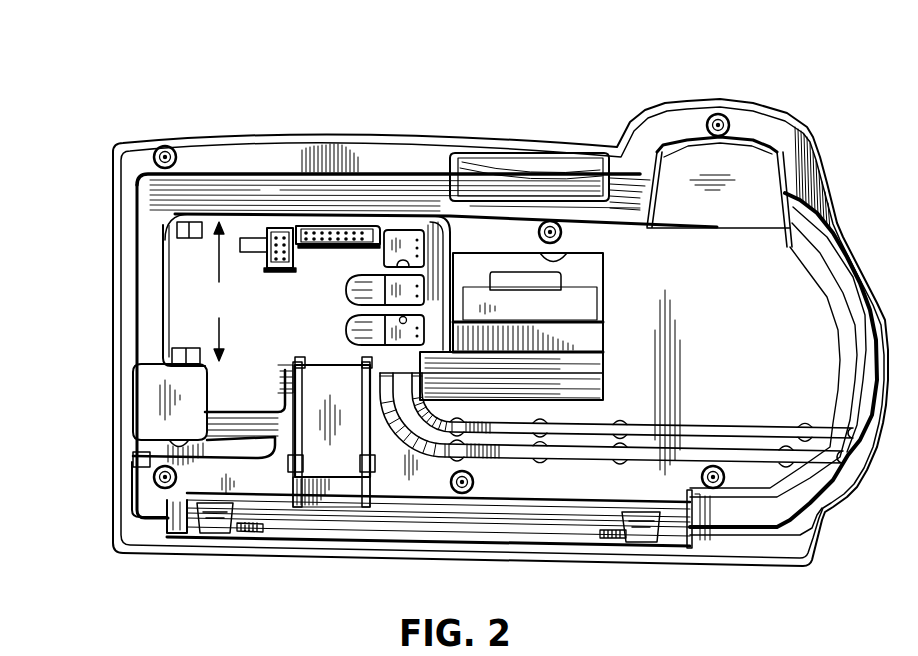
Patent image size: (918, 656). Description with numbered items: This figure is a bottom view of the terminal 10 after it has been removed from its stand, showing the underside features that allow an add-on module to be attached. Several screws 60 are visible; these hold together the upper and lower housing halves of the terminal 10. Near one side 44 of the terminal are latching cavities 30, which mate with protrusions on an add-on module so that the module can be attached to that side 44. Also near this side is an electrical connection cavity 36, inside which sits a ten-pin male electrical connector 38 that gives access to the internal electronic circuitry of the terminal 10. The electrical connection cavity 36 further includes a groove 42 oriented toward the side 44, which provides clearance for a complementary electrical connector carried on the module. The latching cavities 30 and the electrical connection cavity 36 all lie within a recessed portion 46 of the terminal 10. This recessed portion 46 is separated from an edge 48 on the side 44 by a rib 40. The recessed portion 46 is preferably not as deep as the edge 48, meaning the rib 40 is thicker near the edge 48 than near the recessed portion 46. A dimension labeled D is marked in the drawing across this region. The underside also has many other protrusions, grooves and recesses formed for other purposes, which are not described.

The terminal 10 is at (803, 99).
The latching cavities 30 is at (183, 343).
The electrical connection cavity 36 is at (272, 270).
The ten-pin male electrical connector 38 is at (283, 272).
The rib 40 is at (153, 343).
The groove 42 is at (256, 238).
The side 44 is at (112, 340).
The recessed portion 46 is at (302, 347).
The edge 48 is at (127, 222).
The screws 60 is at (168, 146).
The dimension D is at (222, 291).